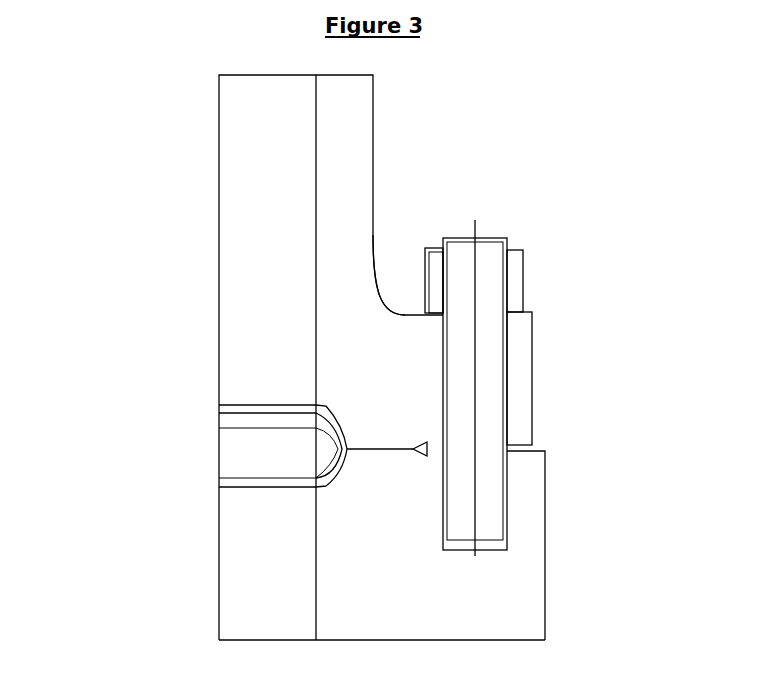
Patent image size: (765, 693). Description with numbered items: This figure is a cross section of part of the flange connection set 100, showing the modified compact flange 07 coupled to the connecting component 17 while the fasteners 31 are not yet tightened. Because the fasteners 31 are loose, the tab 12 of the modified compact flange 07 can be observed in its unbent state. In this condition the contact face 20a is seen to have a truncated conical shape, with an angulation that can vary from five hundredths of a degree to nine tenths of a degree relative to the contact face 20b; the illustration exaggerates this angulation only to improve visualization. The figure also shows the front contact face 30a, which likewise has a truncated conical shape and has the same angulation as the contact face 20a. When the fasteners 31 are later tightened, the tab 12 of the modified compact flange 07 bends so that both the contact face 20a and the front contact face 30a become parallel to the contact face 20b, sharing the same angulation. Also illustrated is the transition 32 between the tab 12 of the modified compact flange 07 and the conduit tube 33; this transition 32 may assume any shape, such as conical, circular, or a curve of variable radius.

The flange connection set 100 is at (188, 215).
The modified compact flange 07 is at (310, 353).
The conduit tube 33 is at (378, 187).
The transition 32 is at (390, 298).
The front contact face 30a is at (415, 313).
The tab 12 is at (535, 325).
The fasteners 31 is at (485, 385).
The contact face 20a is at (413, 443).
The contact face 20b is at (413, 449).
The connecting component 17 is at (546, 596).